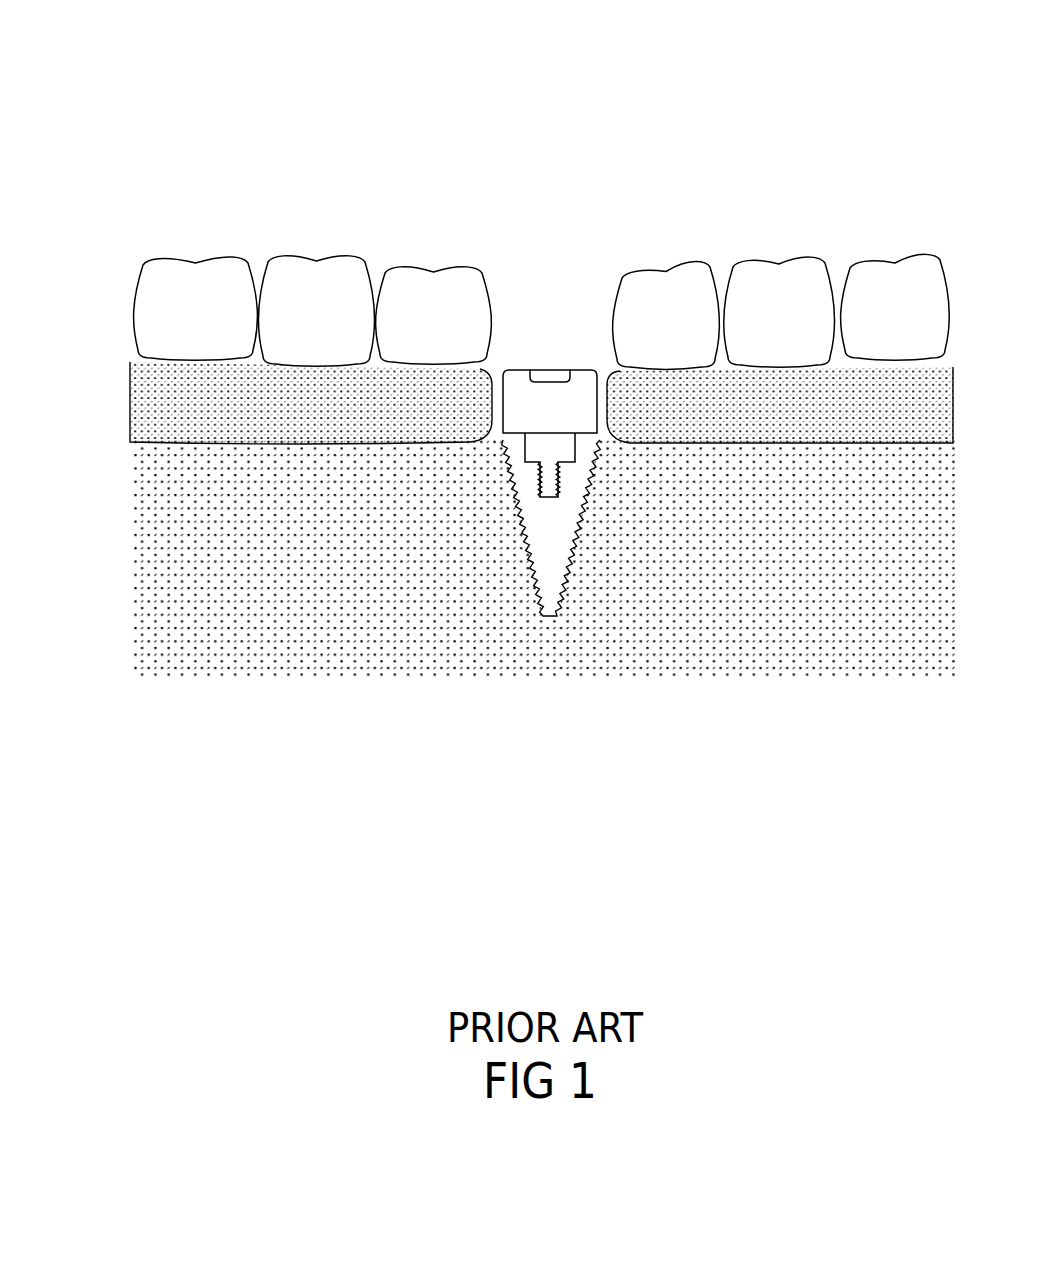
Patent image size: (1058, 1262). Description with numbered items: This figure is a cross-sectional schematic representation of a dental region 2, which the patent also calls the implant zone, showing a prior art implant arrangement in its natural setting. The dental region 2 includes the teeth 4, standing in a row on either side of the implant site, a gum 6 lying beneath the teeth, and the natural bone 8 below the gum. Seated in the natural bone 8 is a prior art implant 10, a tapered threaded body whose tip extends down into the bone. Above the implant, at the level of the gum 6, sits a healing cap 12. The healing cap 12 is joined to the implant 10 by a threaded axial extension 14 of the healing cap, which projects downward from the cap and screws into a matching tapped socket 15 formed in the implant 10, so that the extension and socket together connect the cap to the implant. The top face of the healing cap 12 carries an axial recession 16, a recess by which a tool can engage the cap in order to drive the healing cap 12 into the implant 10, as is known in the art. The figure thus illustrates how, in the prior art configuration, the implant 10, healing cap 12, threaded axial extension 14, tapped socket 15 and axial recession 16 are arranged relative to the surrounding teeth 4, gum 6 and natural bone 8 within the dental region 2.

The dental region 2 is at (665, 85).
The teeth 4 is at (297, 257).
The gum 6 is at (165, 413).
The natural bone 8 is at (460, 673).
The implant 10 is at (577, 547).
The healing cap 12 is at (512, 370).
The threaded axial extension 14 is at (542, 498).
The tapped socket 15 is at (558, 492).
The axial recession 16 is at (560, 370).